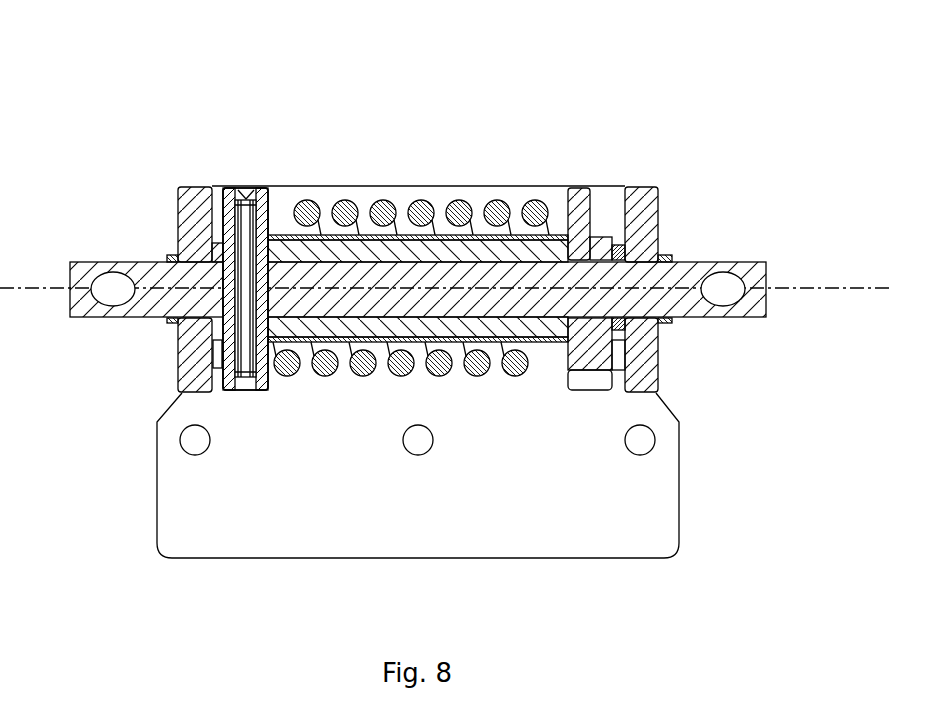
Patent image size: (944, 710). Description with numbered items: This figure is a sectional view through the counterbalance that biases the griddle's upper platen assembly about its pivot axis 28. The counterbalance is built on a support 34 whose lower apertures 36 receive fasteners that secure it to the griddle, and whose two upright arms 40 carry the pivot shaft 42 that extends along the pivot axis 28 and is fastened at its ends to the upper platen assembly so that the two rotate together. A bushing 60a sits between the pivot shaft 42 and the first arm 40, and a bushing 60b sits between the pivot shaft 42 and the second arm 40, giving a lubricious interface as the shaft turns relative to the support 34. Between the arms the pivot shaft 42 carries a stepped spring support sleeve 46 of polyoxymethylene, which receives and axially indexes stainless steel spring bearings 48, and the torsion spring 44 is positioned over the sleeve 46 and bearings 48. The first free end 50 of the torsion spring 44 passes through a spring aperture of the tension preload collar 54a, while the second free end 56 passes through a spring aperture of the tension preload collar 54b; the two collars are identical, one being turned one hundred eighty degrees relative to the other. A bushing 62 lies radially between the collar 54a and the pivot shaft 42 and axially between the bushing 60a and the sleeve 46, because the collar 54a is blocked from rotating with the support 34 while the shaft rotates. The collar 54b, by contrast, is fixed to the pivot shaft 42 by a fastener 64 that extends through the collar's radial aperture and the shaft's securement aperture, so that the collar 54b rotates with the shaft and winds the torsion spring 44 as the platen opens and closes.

The pivot axis 28 is at (818, 287).
The support 34 is at (474, 500).
The lower apertures 36 is at (200, 443).
The arms 40 is at (194, 186).
The pivot shaft 42 is at (157, 303).
The torsion spring 44 is at (411, 320).
The spring support sleeve 46 is at (393, 250).
The spring bearings 48 is at (287, 200).
The first free end 50 is at (618, 352).
The tension preload collar 54a is at (580, 353).
The tension preload collar 54b is at (262, 190).
The second free end 56 is at (213, 357).
The bushing 60a is at (665, 257).
The bushing 60b is at (170, 253).
The bushing 62 is at (593, 252).
The fastener 64 is at (248, 195).